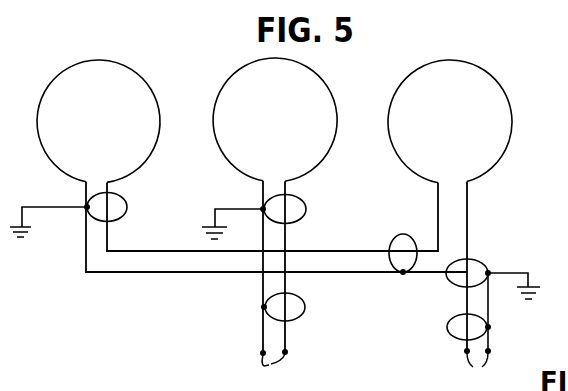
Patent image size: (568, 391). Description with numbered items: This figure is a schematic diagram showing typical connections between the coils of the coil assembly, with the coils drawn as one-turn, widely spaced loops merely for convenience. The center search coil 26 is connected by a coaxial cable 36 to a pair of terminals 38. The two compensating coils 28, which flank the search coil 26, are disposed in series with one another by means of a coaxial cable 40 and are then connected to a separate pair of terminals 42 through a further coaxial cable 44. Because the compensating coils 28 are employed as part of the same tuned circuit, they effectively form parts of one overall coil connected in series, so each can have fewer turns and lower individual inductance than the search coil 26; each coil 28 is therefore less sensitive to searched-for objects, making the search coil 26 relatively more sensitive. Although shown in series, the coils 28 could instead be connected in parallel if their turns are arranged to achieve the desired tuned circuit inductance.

The search coil 26 is at (226, 82).
The compensating coils 28 is at (89, 60).
The coaxial cable 36 is at (298, 238).
The terminals 38 is at (276, 342).
The coaxial cable 40 is at (345, 276).
The terminals 42 is at (469, 352).
The coaxial cable 44 is at (491, 297).